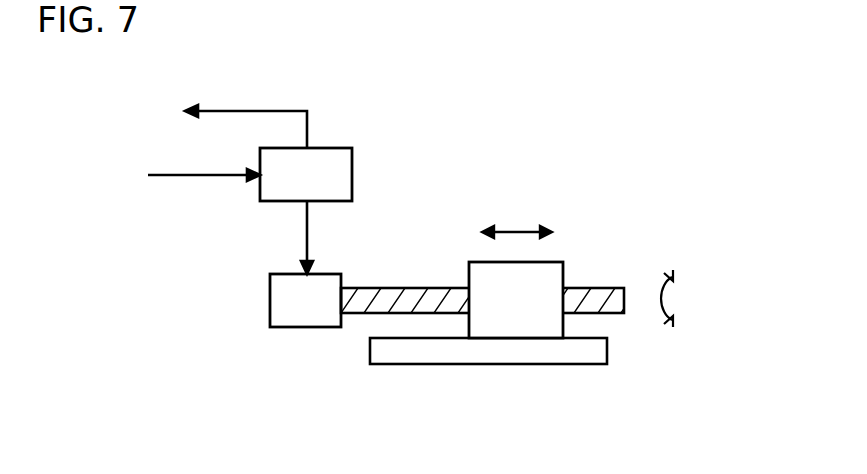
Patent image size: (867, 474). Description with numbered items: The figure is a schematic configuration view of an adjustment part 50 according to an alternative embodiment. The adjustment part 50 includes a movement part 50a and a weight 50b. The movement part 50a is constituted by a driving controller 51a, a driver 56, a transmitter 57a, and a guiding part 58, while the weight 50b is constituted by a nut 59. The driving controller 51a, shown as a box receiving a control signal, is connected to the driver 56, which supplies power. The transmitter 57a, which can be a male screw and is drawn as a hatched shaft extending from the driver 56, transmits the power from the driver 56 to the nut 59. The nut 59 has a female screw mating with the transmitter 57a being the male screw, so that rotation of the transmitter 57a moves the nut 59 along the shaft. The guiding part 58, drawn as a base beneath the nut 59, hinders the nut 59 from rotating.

The adjustment part 50 is at (250, 93).
The movement part 50a is at (573, 96).
The weight 50b is at (518, 305).
The driving controller 51a is at (337, 172).
The driver 56 is at (327, 287).
The transmitter 57a is at (405, 290).
The guiding part 58 is at (588, 352).
The nut 59 is at (536, 329).